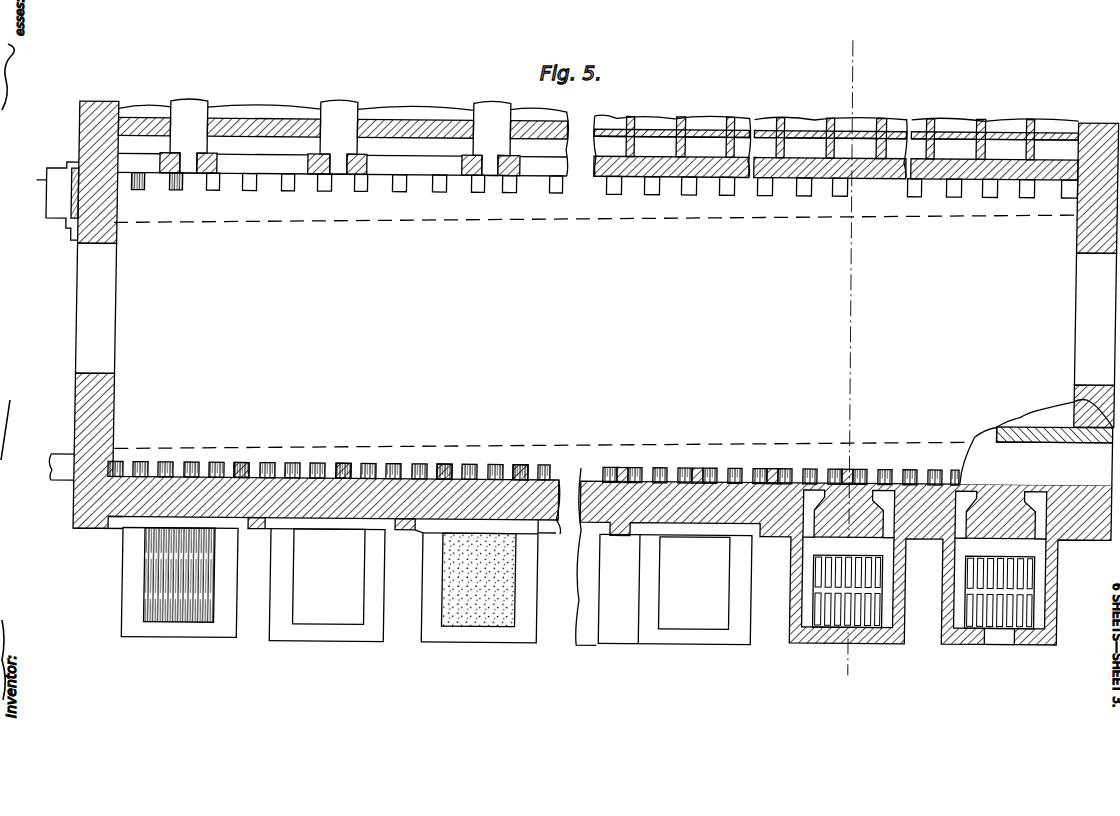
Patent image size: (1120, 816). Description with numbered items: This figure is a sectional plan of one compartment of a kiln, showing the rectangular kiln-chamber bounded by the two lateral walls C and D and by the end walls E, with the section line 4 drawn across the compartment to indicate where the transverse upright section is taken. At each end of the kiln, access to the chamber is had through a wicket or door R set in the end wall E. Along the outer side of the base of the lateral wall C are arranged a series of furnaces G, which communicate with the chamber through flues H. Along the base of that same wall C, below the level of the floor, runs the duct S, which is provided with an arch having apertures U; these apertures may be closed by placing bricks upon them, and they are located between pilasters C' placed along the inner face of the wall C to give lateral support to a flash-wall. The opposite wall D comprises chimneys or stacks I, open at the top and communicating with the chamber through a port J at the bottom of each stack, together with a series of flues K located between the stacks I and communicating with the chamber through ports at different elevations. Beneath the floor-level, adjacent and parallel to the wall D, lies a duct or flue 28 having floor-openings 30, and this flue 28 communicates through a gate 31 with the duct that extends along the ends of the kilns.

The wicket or door R is at (595, 314).
The end walls E is at (76, 400).
The duct or flue 28 is at (680, 205).
The gate 31 is at (68, 202).
The side wall D is at (688, 162).
The flues K is at (836, 150).
The chimneys or stacks I is at (342, 152).
The port J is at (184, 176).
The floor-openings 30 is at (398, 190).
The section line 4 is at (593, 358).
The side wall C is at (599, 556).
The pilasters C' is at (534, 453).
The apertures U is at (449, 468).
The furnaces G is at (543, 601).
The flues H is at (808, 497).
The duct S is at (1036, 442).